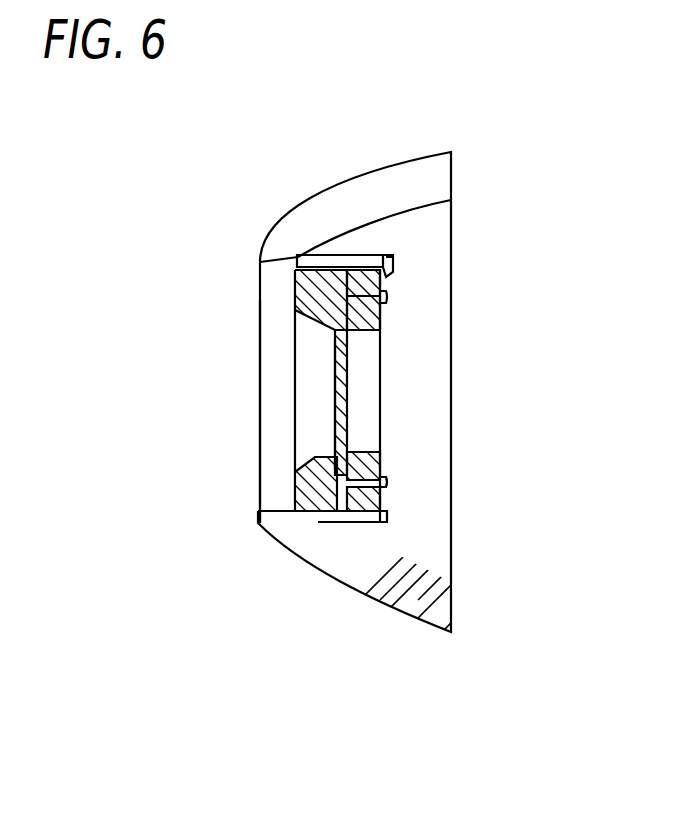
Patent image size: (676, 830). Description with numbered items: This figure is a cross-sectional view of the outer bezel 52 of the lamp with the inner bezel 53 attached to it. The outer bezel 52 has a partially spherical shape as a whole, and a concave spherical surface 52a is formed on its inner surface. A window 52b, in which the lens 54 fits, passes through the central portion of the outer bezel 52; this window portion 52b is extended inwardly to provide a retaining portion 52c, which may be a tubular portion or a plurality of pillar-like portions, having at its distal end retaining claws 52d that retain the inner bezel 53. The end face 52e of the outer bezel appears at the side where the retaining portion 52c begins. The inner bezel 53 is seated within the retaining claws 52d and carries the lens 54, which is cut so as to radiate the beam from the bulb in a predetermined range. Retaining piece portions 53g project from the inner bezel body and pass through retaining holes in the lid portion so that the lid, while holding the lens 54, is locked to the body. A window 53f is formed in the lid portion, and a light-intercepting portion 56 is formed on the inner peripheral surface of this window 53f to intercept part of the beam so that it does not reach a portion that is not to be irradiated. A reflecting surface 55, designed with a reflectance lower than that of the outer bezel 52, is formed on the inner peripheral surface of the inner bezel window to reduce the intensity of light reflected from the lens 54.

The outer bezel 52 is at (328, 180).
The concave spherical surface 52a is at (423, 209).
The window 52b is at (266, 458).
The retaining portion 52c is at (385, 255).
The retaining claws 52d is at (393, 275).
The end face 52e is at (262, 265).
The inner bezel 53 is at (416, 402).
The window 53f is at (347, 389).
The retaining piece portions 53g is at (387, 297).
The lens 54 is at (358, 388).
The reflecting surface 55 is at (268, 511).
The light-intercepting portion 56 is at (366, 452).